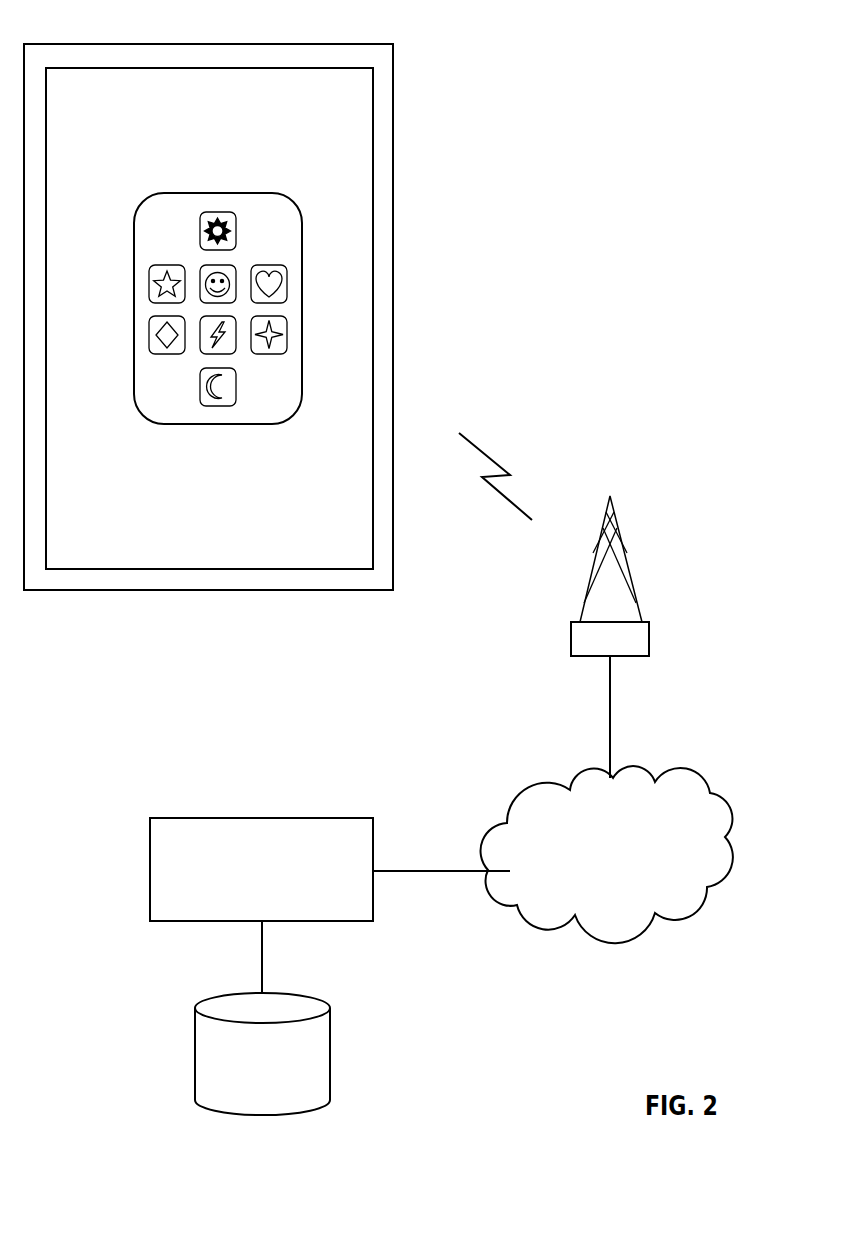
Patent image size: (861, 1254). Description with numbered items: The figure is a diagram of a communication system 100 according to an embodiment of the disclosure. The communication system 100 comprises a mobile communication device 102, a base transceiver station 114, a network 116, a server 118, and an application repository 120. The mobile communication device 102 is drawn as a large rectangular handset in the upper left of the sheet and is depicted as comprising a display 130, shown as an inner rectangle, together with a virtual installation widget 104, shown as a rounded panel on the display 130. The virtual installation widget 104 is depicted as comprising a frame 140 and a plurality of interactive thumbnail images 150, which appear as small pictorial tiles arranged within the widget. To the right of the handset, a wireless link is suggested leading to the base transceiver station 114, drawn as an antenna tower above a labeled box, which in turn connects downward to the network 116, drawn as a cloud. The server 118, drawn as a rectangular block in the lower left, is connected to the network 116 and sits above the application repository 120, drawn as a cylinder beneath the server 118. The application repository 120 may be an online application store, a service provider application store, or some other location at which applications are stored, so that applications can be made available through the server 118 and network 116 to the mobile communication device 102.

The communication system 100 is at (725, 69).
The mobile communication device 102 is at (392, 57).
The virtual installation widget 104 is at (314, 212).
The base transceiver station 114 is at (649, 640).
The network 116 is at (692, 768).
The server 118 is at (150, 868).
The application repository 120 is at (195, 1056).
The display 130 is at (373, 107).
The frame 140 is at (301, 283).
The interactive thumbnail images 150 is at (283, 333).